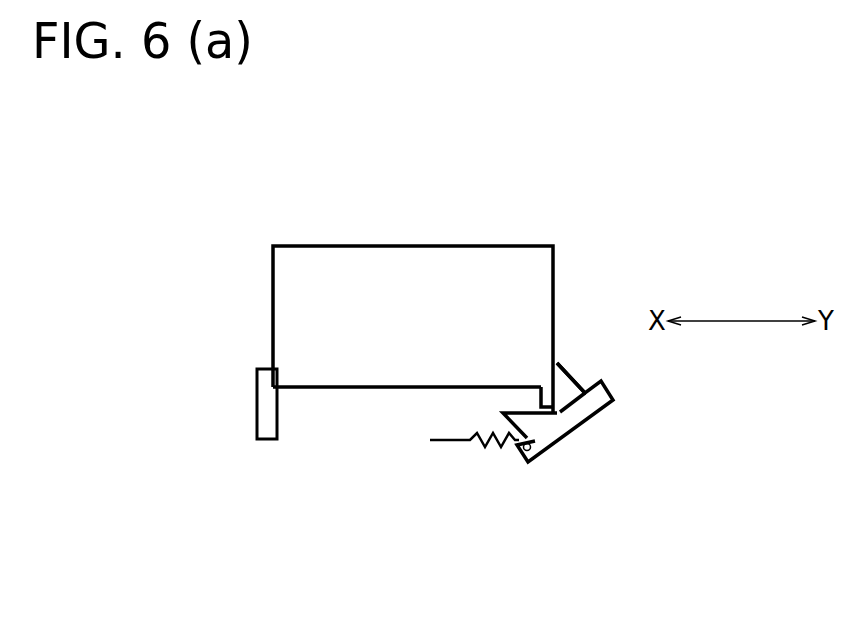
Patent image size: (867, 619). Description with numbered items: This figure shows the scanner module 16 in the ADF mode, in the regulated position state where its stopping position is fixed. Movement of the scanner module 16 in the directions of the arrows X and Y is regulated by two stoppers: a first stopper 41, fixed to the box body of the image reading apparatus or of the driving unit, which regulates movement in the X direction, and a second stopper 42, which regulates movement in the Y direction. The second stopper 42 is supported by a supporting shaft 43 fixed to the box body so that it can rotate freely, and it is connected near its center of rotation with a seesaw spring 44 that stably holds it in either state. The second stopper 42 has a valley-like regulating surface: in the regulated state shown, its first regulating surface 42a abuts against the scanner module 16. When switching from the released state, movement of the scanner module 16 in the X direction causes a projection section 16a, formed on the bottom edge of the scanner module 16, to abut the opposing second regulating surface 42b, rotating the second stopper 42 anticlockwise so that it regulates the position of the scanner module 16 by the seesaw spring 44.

The scanner module 16 is at (382, 246).
The projection section 16a is at (538, 398).
The first stopper 41 is at (267, 386).
The second stopper 42 is at (577, 428).
The first regulating surface 42a is at (550, 372).
The second regulating surface 42b is at (532, 413).
The supporting shaft 43 is at (530, 463).
The seesaw spring 44 is at (448, 441).